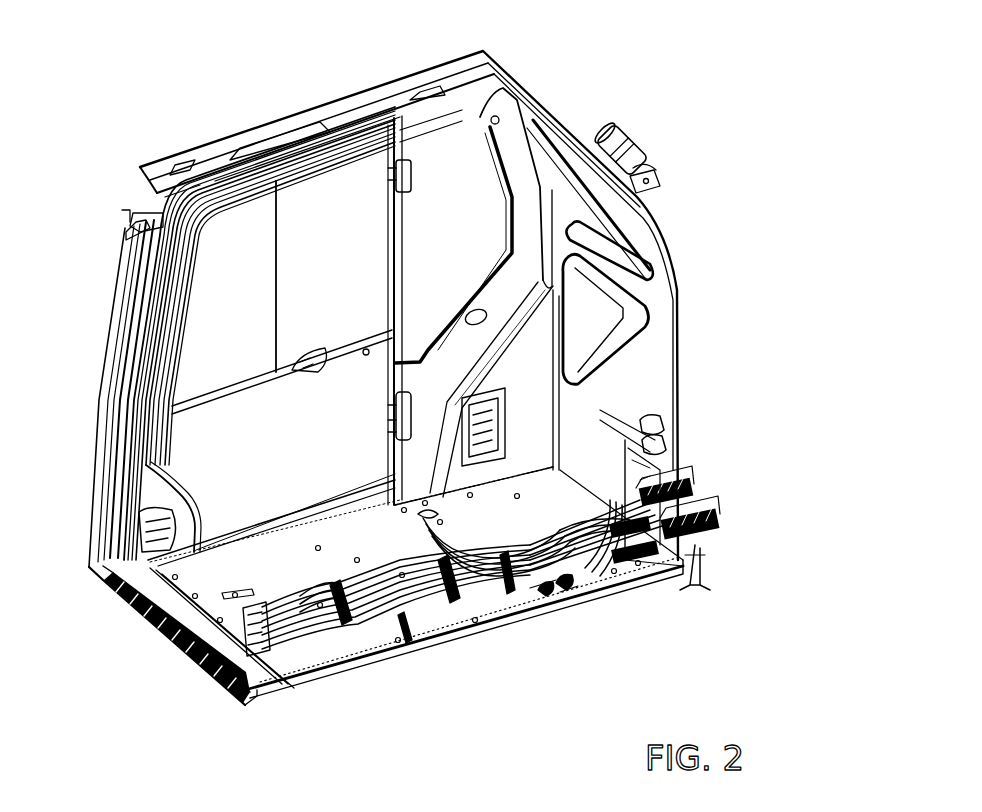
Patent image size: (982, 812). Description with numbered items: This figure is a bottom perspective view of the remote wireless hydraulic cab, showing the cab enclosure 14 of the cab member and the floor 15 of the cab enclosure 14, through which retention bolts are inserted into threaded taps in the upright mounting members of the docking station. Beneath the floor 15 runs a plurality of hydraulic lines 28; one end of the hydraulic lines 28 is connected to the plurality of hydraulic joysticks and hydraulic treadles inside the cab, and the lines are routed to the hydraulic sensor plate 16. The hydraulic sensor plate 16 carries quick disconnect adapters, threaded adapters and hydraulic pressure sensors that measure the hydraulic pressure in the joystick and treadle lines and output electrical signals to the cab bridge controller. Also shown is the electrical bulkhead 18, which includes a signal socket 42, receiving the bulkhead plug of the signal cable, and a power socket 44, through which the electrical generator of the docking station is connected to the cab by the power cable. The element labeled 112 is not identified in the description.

The cab enclosure 14 is at (383, 378).
The floor 15 is at (373, 643).
The hydraulic sensor plate 16 is at (712, 503).
The electrical bulkhead 18 is at (623, 593).
The hydraulic lines 28 is at (612, 460).
The signal socket 42 is at (583, 595).
The power socket 44 is at (540, 588).
The door sill 112 is at (247, 637).